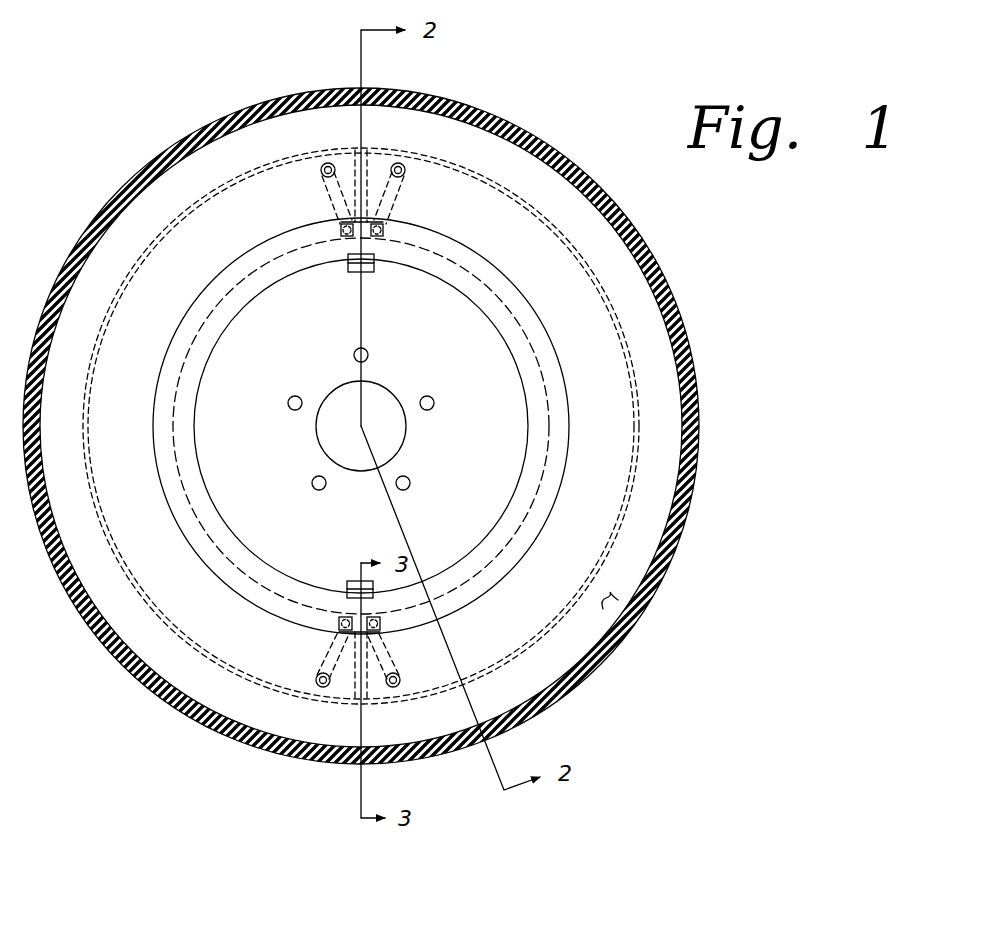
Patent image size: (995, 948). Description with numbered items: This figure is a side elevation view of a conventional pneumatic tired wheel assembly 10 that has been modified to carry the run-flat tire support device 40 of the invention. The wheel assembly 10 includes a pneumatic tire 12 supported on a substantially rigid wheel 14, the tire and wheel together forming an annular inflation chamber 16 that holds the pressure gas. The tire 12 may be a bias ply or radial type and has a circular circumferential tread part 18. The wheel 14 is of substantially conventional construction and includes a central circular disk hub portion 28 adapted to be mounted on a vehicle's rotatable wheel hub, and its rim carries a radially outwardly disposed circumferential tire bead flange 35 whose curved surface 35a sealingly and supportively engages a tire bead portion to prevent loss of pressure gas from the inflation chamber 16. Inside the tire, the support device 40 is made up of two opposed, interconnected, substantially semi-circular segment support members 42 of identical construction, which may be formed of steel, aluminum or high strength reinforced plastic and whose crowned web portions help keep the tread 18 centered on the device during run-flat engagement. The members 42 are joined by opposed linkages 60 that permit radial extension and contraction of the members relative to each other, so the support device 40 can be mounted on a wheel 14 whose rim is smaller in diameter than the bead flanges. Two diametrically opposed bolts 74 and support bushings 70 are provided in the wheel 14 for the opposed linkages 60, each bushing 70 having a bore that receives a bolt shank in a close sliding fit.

The wheel assembly 10 is at (703, 262).
The pneumatic tire 12 is at (693, 340).
The wheel 14 is at (543, 500).
The inflation chamber 16 is at (606, 604).
The tread part 18 is at (692, 460).
The disk hub portion 28 is at (270, 520).
The tire bead flange 35 is at (527, 308).
The curved surface 35a is at (462, 237).
The tire support device 40 is at (530, 190).
The segment support member 42 is at (238, 170).
The linkage 60 is at (403, 202).
The bushing 70 is at (345, 254).
The bolt 74 is at (376, 256).